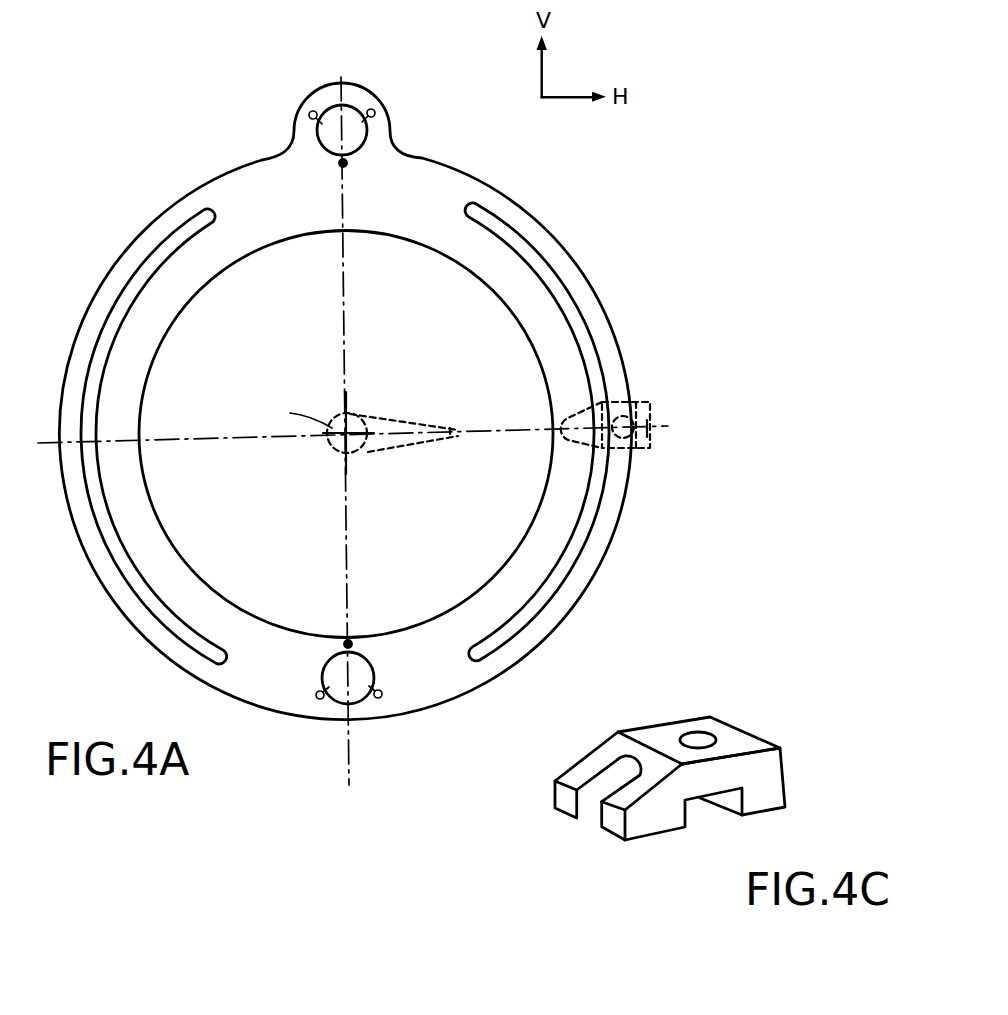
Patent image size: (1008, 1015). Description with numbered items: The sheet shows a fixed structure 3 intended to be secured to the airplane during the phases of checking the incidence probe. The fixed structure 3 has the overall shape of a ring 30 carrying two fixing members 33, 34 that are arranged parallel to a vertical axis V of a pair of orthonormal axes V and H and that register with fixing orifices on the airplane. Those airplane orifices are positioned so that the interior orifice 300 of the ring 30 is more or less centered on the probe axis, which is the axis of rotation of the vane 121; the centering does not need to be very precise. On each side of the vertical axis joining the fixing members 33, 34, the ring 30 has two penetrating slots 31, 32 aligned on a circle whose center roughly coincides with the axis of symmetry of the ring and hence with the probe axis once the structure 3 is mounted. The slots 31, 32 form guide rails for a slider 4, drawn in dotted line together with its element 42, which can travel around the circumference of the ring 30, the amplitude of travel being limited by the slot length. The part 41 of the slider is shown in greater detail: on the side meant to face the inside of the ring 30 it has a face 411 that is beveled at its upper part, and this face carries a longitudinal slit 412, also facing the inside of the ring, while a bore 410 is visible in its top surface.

In FIG. 4A, the fixed structure 3 is at (360, 427).
In FIG. 4A, the ring 30 is at (535, 233).
In FIG. 4A, the penetrating slot 31 is at (568, 292).
In FIG. 4A, the penetrating slot 32 is at (147, 273).
In FIG. 4A, the fixing member 33 is at (353, 118).
In FIG. 4A, the fixing member 34 is at (332, 692).
In FIG. 4A, the interior orifice 300 is at (177, 552).
In FIG. 4A, the vane 121 is at (378, 448).
In FIG. 4A, the slider 4 is at (654, 383).
In FIG. 4A, the clamp 42 is at (620, 451).
In FIG. 4C, the part 41 is at (657, 818).
In FIG. 4C, the bore 410 is at (694, 738).
In FIG. 4C, the face 411 is at (597, 756).
In FIG. 4C, the longitudinal slit 412 is at (588, 808).